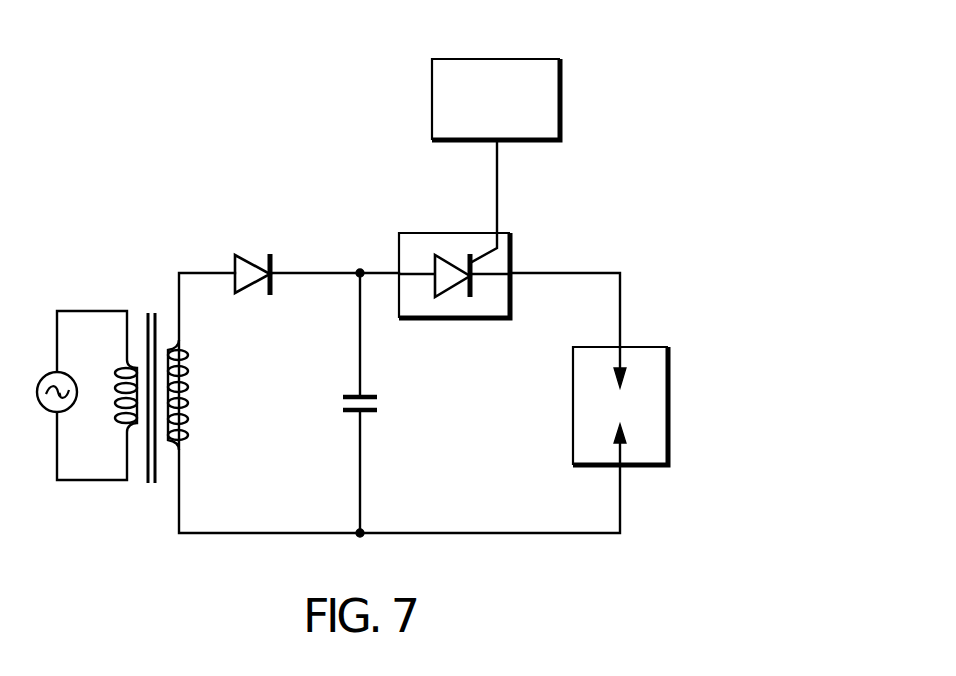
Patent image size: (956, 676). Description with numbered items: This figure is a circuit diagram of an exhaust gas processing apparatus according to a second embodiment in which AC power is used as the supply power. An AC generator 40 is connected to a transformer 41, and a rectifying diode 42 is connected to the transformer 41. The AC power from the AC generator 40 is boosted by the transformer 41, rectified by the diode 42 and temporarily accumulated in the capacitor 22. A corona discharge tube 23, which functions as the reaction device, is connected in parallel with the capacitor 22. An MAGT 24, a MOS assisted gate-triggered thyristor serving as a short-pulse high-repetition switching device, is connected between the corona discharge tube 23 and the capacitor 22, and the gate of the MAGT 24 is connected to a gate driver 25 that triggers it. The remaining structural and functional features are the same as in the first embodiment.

The capacitor 22 is at (378, 406).
The corona discharge tube 23 is at (579, 390).
The MAGT 24 is at (425, 240).
The gate driver 25 is at (528, 63).
The AC generator 40 is at (40, 404).
The transformer 41 is at (120, 372).
The rectifying diode 42 is at (250, 265).